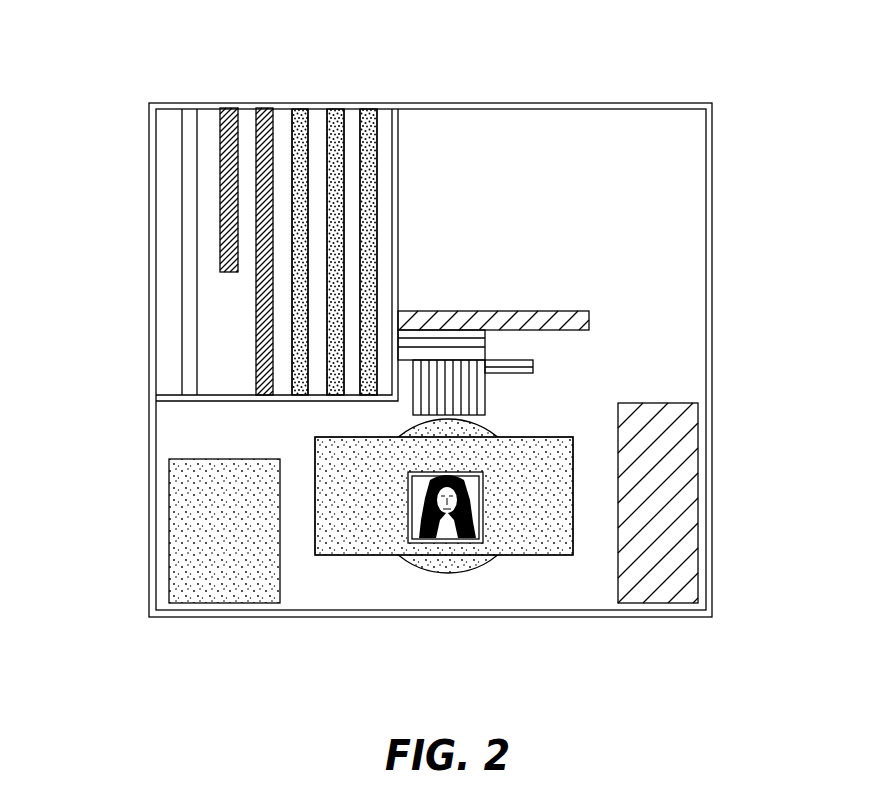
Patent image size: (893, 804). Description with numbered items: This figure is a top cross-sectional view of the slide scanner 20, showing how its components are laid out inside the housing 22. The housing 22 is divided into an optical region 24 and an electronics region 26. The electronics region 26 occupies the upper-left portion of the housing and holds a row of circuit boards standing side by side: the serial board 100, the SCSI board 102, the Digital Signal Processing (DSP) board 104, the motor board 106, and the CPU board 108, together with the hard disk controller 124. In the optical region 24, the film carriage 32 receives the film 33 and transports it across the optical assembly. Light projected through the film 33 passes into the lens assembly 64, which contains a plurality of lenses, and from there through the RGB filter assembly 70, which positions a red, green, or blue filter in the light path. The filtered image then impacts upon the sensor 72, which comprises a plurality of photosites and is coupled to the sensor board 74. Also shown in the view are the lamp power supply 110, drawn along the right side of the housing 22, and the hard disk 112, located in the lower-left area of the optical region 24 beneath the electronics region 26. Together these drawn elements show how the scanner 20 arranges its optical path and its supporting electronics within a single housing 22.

The slide scanner 20 is at (118, 288).
The housing 22 is at (712, 280).
The optical region 24 is at (570, 420).
The electronics region 26 is at (190, 70).
The film carriage 32 is at (543, 543).
The film 33 is at (420, 530).
The lens assembly 64 is at (470, 385).
The RGB filter assembly 70 is at (533, 363).
The sensor 72 is at (478, 347).
The sensor board 74 is at (498, 295).
The serial board 100 is at (233, 107).
The SCSI board 102 is at (263, 107).
The Digital Signal Processing (DSP) board 104 is at (300, 107).
The motor board 106 is at (338, 107).
The CPU board 108 is at (368, 107).
The lamp power supply 110 is at (690, 547).
The hard disk 112 is at (233, 593).
The hard disk controller 124 is at (188, 115).